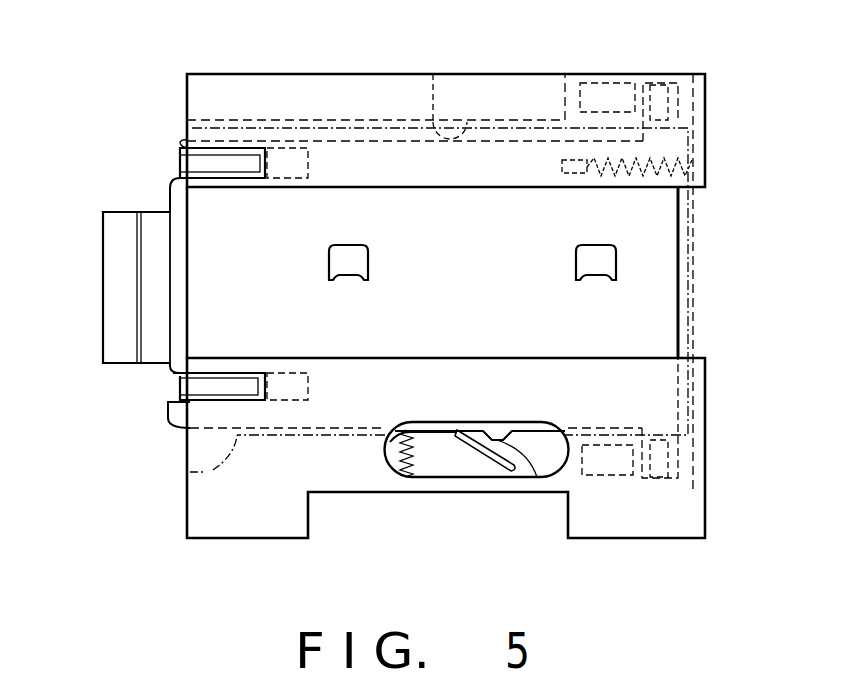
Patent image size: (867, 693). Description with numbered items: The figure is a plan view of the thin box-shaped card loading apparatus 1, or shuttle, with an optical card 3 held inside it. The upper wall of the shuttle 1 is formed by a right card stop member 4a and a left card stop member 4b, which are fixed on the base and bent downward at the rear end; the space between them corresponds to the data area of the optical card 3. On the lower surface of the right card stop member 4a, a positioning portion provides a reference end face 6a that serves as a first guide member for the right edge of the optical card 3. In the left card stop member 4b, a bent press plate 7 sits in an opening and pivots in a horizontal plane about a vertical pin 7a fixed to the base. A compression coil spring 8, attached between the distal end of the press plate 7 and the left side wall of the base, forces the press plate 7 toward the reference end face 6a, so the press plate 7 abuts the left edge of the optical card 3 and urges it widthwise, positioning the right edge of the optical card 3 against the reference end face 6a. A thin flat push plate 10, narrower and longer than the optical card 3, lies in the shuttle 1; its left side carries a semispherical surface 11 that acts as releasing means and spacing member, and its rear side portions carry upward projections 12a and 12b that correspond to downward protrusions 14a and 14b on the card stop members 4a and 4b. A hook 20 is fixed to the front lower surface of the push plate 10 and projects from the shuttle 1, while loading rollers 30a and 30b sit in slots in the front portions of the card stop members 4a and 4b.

The card loading apparatus 1 is at (88, 378).
The optical card 3 is at (187, 472).
The right card stop member 4a is at (337, 78).
The left card stop member 4b is at (345, 483).
The reference end face 6a is at (433, 74).
The press plate 7 is at (462, 438).
The vertical pin 7a is at (513, 470).
The compression coil spring 8 is at (390, 470).
The push plate 10 is at (671, 300).
The semispherical surface 11 is at (537, 478).
The upward projection 12a is at (663, 78).
The upward projection 12b is at (658, 478).
The downward protrusion 14a is at (602, 78).
The downward protrusion 14b is at (598, 475).
The hook 20 is at (123, 223).
The loading roller 30a is at (178, 163).
The loading roller 30b is at (177, 392).